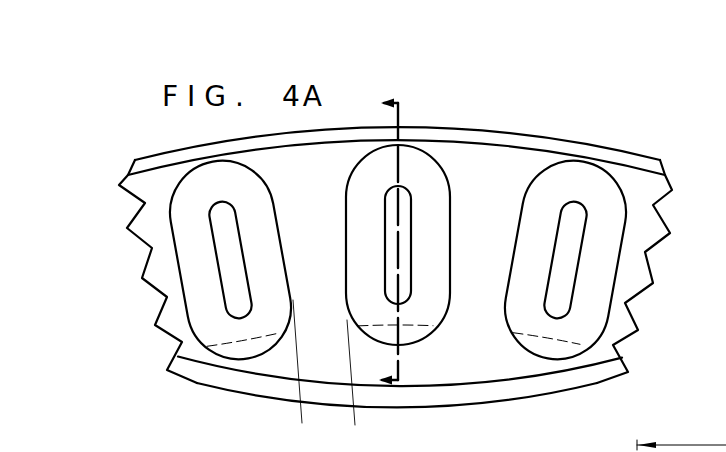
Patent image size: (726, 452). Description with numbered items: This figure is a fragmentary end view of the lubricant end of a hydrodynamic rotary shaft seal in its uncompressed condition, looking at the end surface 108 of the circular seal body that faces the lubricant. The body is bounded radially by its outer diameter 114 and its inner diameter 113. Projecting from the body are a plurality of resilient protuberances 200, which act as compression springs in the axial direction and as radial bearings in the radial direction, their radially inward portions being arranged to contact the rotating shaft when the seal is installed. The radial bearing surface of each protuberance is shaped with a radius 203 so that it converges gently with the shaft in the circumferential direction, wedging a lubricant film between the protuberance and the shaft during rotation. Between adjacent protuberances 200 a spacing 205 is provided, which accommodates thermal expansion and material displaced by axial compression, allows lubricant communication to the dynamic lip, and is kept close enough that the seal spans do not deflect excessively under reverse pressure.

The lubricant end surface 108 is at (490, 188).
The outer diameter 114 is at (450, 128).
The inner diameter 113 is at (452, 360).
The resilient protuberances 200 is at (598, 210).
The radius 203 is at (522, 355).
The spacing 205 is at (382, 417).